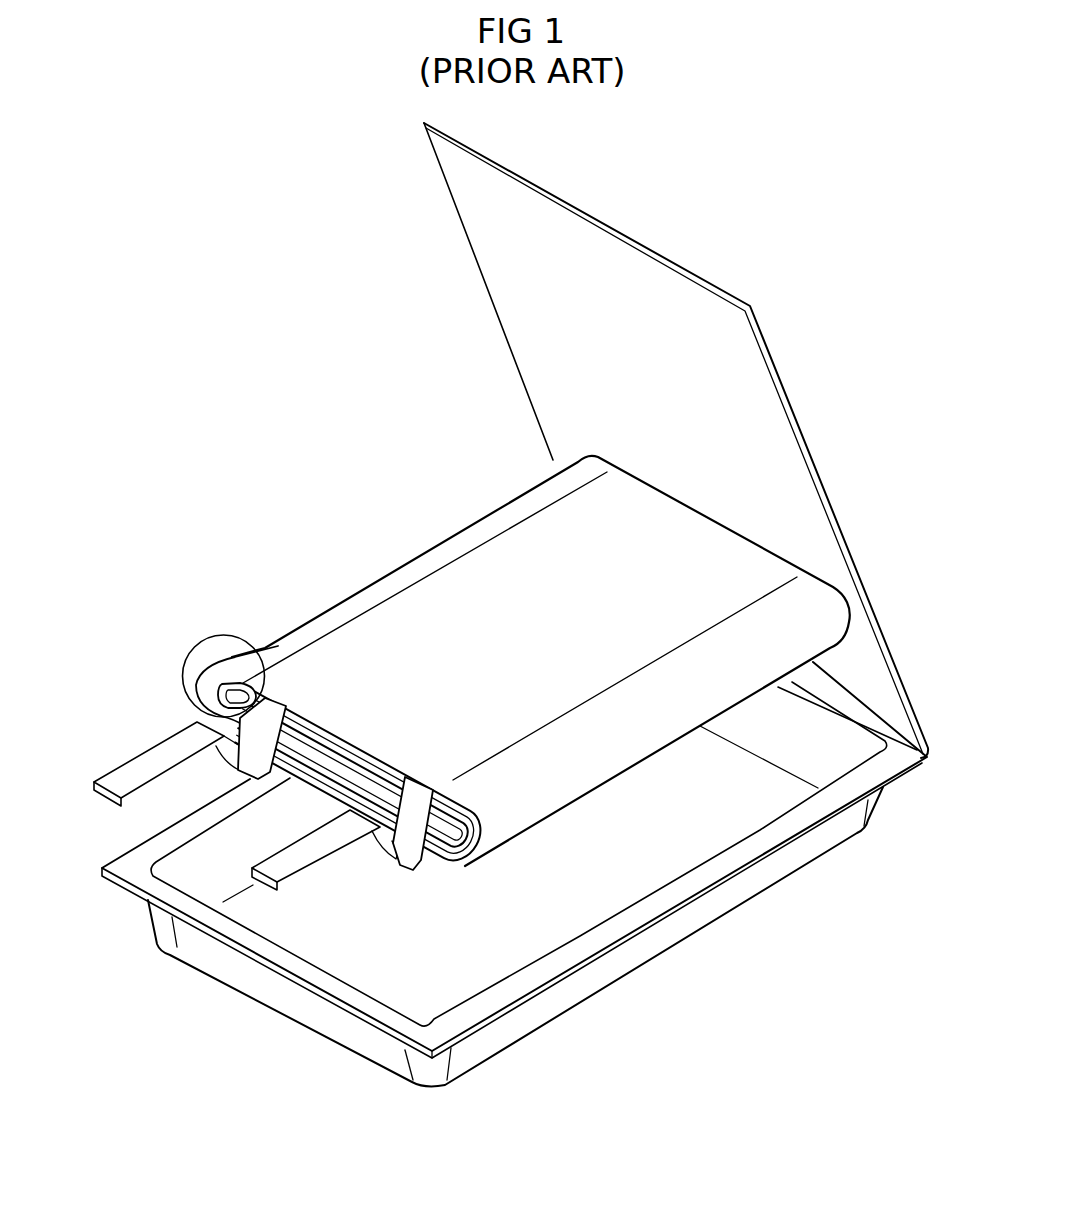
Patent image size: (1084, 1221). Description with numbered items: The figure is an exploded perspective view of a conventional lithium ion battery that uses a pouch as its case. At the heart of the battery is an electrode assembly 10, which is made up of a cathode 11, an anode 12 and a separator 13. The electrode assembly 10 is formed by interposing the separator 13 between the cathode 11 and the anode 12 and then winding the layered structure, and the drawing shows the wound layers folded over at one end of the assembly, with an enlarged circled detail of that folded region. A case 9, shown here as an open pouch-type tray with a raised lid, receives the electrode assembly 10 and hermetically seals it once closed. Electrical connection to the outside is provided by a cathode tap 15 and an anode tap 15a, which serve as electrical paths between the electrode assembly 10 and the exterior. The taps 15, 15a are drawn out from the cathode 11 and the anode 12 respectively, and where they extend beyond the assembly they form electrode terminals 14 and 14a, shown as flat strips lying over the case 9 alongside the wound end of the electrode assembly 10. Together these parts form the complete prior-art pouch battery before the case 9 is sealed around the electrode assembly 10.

The case 9 is at (717, 912).
The electrode assembly 10 is at (494, 661).
The cathode 11 is at (227, 667).
The anode 12 is at (233, 702).
The separator 13 is at (225, 665).
The electrode terminal 14 is at (132, 772).
The electrode terminal 14a is at (298, 858).
The cathode tap 15 is at (268, 727).
The anode tap 15a is at (418, 793).